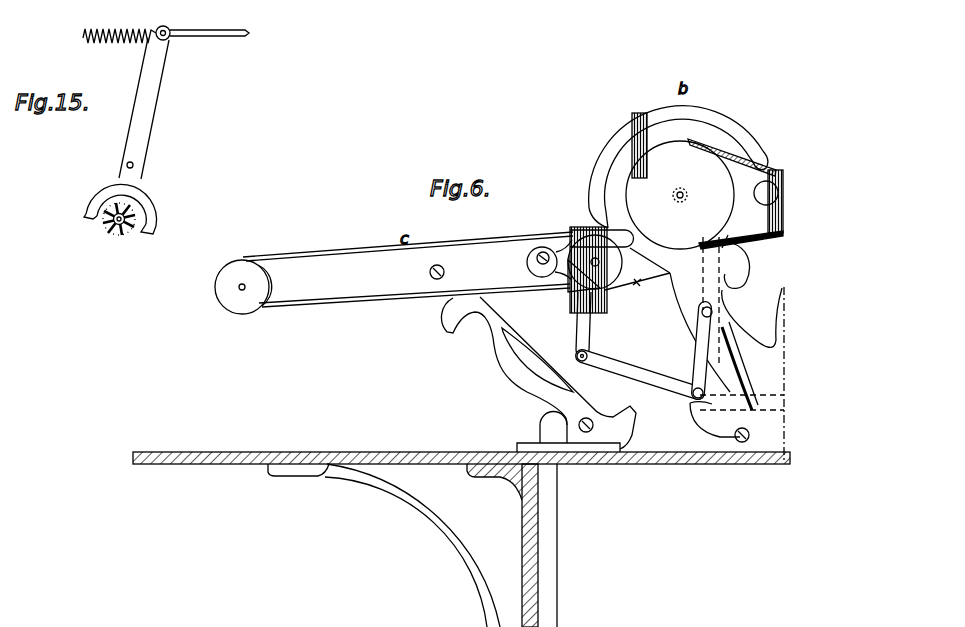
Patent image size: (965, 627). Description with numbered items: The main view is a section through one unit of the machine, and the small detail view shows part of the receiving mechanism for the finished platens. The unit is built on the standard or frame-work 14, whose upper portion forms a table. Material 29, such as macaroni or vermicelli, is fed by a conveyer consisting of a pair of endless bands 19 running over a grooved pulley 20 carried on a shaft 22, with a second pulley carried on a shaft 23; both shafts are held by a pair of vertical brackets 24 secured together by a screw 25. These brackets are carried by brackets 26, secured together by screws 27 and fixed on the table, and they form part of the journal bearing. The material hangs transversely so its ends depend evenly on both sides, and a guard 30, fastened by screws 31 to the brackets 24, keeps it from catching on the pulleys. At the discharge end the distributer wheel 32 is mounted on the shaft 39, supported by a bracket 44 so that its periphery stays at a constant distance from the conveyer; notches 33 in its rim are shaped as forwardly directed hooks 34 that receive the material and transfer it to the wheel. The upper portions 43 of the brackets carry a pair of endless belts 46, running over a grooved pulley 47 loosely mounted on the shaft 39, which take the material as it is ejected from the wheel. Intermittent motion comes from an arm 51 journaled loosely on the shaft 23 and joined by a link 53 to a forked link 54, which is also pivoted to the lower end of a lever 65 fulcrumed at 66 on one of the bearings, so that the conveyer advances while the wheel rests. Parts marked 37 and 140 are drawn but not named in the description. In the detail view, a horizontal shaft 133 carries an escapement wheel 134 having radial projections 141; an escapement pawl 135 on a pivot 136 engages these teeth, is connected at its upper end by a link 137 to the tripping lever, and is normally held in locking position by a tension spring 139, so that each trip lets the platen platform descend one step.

In FIG. 6, the standard or frame-work 14 is at (275, 452).
In FIG. 6, the endless bands 19 is at (325, 256).
In FIG. 6, the grooved pulley 20 is at (222, 305).
In FIG. 6, the shaft 22 is at (239, 287).
In FIG. 6, the shaft 23 is at (566, 292).
In FIG. 6, the vertical brackets 24 is at (414, 289).
In FIG. 6, the screw 25 is at (441, 270).
In FIG. 6, the brackets 26 is at (494, 363).
In FIG. 6, the screws 27 is at (579, 424).
In FIG. 6, the material 29 is at (572, 231).
In FIG. 6, the guard 30 is at (540, 274).
In FIG. 6, the screws 31 is at (537, 259).
In FIG. 6, the distributer wheel 32 is at (590, 170).
In FIG. 6, the notches 33 is at (590, 230).
In FIG. 6, the hooks 34 is at (631, 113).
In FIG. 6, the strip 37 is at (769, 170).
In FIG. 6, the shaft 39 is at (681, 199).
In FIG. 6, the upper portions of the brackets 43 is at (694, 347).
In FIG. 6, the bracket 44 is at (707, 366).
In FIG. 6, the endless belts 46 is at (746, 238).
In FIG. 6, the grooved pulley 47 is at (650, 260).
In FIG. 6, the arm 51 is at (578, 331).
In FIG. 6, the link 53 is at (618, 364).
In FIG. 6, the forked link 54 is at (719, 423).
In FIG. 6, the lever 65 is at (697, 369).
In FIG. 6, the fulcrum 66 is at (702, 313).
In FIG. 15, the horizontal shaft 133 is at (110, 228).
In FIG. 15, the escapement wheel 134 is at (120, 236).
In FIG. 15, the escapement pawl 135 is at (152, 210).
In FIG. 15, the pivot 136 is at (134, 164).
In FIG. 15, the link 137 is at (215, 38).
In FIG. 15, the tension spring 139 is at (125, 43).
In FIG. 15, the notch 140 is at (84, 216).
In FIG. 15, the radial projections 141 is at (102, 200).